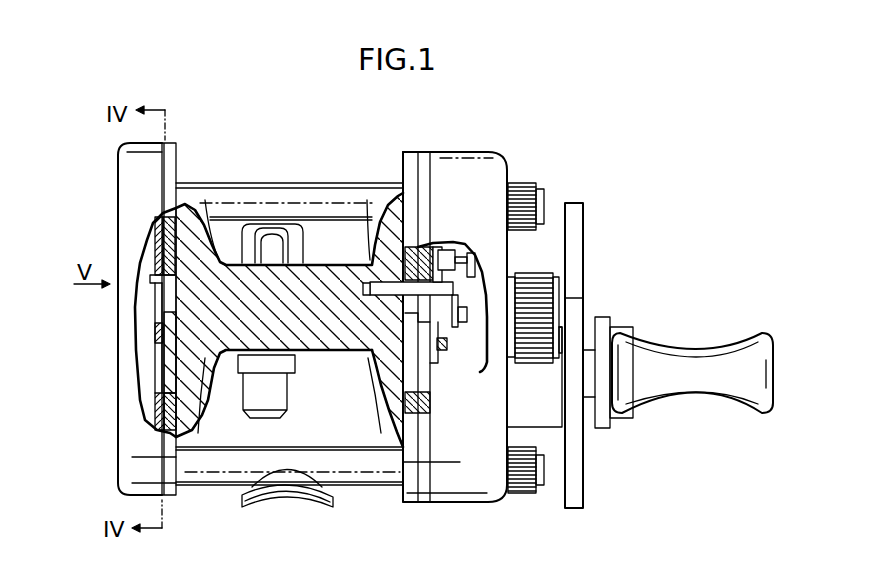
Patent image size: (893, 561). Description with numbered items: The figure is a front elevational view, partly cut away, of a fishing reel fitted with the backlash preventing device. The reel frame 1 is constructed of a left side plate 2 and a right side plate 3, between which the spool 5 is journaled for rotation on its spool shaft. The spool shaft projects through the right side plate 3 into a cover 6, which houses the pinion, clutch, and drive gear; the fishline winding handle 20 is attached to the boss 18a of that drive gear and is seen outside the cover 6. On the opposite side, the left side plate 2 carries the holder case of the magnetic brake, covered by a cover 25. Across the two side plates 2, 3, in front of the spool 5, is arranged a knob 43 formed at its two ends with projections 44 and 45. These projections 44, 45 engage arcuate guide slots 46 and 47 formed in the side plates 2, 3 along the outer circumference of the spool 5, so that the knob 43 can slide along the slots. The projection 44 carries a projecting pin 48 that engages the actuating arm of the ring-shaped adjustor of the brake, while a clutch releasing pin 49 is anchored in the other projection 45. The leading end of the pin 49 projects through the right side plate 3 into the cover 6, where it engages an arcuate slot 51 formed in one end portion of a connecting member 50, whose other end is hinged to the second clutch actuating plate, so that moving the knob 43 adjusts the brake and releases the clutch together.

The reel frame 1 is at (453, 153).
The left side plate 2 is at (172, 160).
The right side plate 3 is at (413, 162).
The spool 5 is at (363, 390).
The cover 6 is at (482, 170).
The boss 18a is at (591, 348).
The fishline winding handle 20 is at (675, 357).
The cover 25 is at (123, 172).
The knob 43 is at (323, 273).
The projection 44 is at (157, 297).
The projection 45 is at (407, 314).
The arcuate guide slot 46 is at (167, 360).
The arcuate guide slot 47 is at (425, 378).
The projecting pin 48 is at (152, 283).
The clutch releasing pin 49 is at (388, 288).
The connecting member 50 is at (442, 352).
The arcuate slot 51 is at (455, 336).